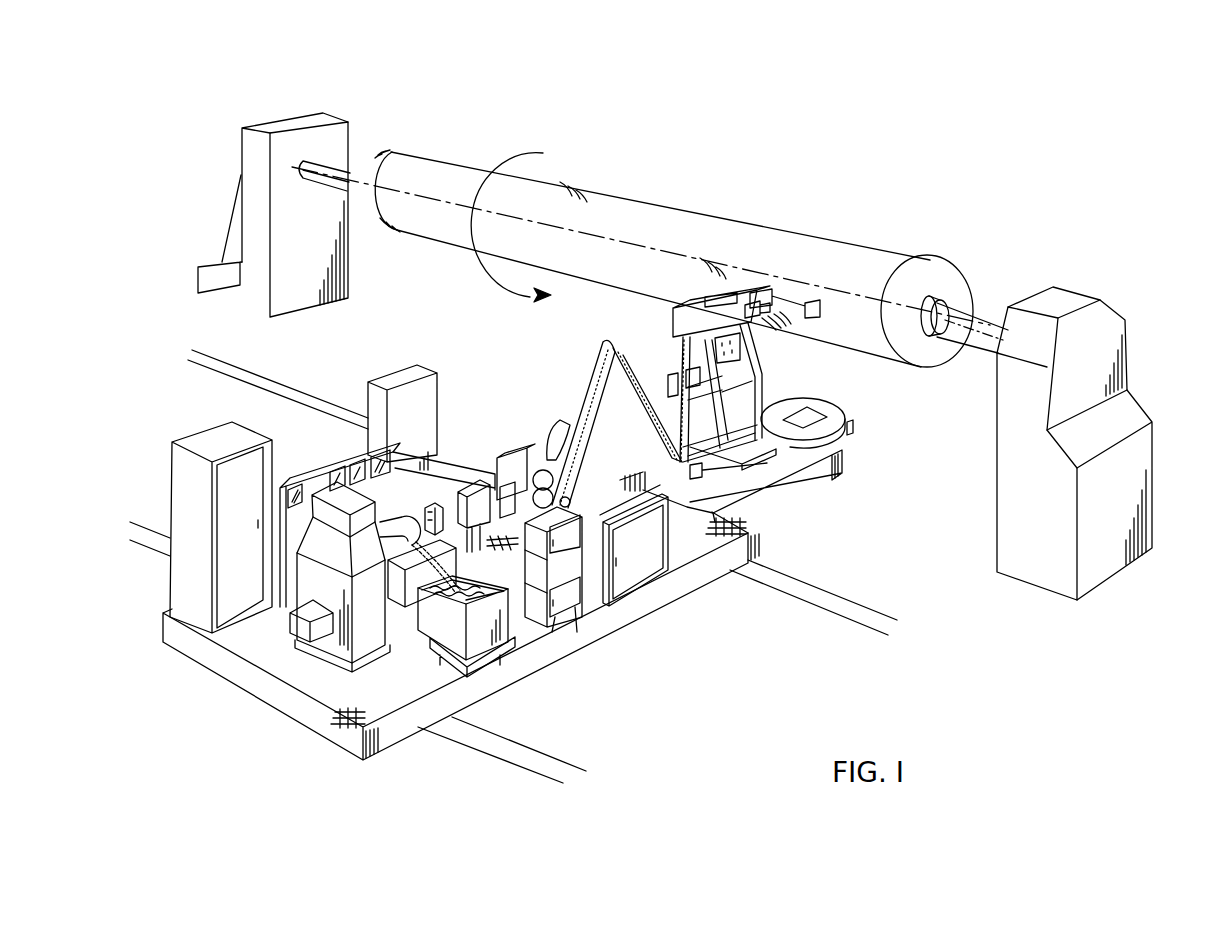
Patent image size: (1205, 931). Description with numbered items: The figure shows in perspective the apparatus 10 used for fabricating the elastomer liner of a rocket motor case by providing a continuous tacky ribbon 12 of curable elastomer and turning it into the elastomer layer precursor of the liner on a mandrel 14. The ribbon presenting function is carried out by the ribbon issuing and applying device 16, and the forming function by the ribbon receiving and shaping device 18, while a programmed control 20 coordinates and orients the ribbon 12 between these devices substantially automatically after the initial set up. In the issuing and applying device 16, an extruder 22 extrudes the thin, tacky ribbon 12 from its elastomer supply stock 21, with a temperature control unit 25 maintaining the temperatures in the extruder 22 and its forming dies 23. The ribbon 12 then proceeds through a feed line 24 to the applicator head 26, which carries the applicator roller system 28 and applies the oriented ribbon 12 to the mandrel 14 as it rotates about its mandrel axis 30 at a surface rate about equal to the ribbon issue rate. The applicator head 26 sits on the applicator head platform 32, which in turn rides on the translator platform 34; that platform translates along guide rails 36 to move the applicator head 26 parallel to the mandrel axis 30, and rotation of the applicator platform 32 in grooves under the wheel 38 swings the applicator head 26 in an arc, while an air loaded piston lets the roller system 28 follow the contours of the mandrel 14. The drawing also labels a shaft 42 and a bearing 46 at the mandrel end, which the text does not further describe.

The apparatus 10 is at (766, 164).
The continuous tacky ribbon 12 is at (680, 366).
The mandrel 14 is at (863, 257).
The ribbon issuing and applying device 16 is at (687, 630).
The ribbon receiving and shaping device 18 is at (288, 302).
The control 20 is at (557, 585).
The elastomer supply stock 21 is at (482, 647).
The extruder 22 is at (342, 637).
The forming dies 23 is at (543, 470).
The feed line 24 is at (597, 368).
The temperature control unit 25 is at (343, 465).
The applicator head 26 is at (763, 330).
The applicator roller system 28 is at (775, 284).
The mandrel axis 30 is at (430, 197).
The applicator head platform 32 is at (738, 453).
The translator platform 34 is at (553, 647).
The guide rails 36 is at (832, 600).
The wheel 38 is at (832, 408).
The shaft 42 is at (952, 300).
The bearing 46 is at (935, 298).